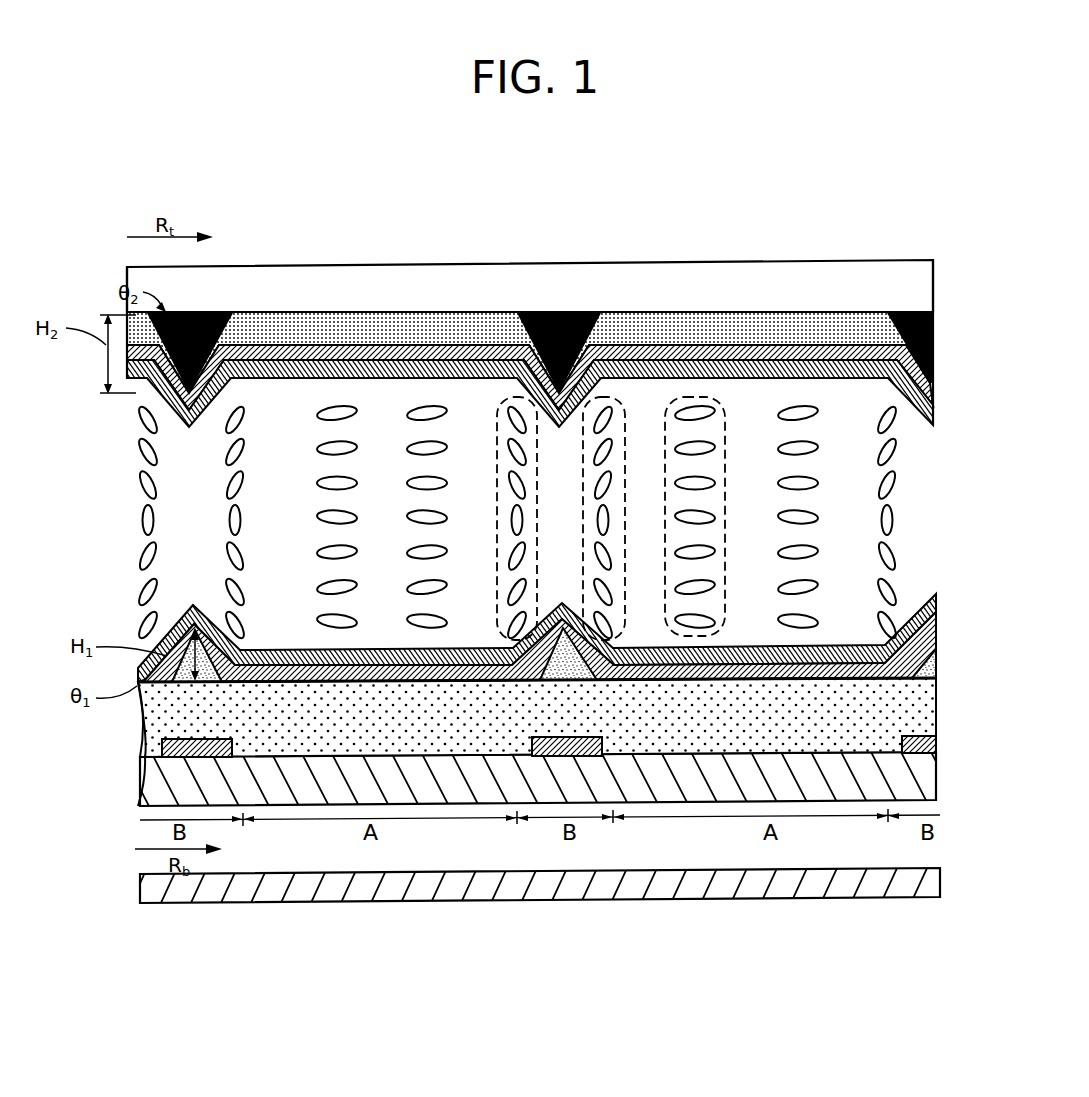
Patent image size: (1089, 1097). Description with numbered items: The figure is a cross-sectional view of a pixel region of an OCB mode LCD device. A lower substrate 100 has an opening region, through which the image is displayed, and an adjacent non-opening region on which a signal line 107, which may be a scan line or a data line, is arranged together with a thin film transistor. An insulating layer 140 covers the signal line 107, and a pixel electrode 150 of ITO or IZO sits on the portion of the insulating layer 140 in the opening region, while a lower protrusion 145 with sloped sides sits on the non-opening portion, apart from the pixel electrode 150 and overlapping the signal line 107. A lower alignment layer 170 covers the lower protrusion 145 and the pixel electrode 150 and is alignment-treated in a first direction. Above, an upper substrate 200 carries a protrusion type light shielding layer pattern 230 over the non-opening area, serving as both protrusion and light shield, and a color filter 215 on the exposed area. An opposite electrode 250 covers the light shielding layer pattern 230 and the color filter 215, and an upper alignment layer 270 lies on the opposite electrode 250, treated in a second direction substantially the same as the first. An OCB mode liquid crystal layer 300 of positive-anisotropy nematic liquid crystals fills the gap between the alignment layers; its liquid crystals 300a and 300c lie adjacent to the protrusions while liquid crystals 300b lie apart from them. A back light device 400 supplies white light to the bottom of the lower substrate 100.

The lower substrate 100 is at (920, 782).
The signal line 107 is at (938, 745).
The insulating layer 140 is at (920, 707).
The lower protrusion 145 is at (930, 668).
The pixel electrode 150 is at (810, 679).
The lower alignment layer 170 is at (930, 630).
The upper substrate 200 is at (900, 292).
The color filter 215 is at (425, 326).
The light shielding layer pattern 230 is at (553, 311).
The opposite electrode 250 is at (382, 353).
The upper alignment layer 270 is at (322, 364).
The OCB mode liquid crystal layer 300 is at (922, 517).
The liquid crystals 300a is at (607, 396).
The liquid crystals 300b is at (705, 396).
The liquid crystals 300c is at (510, 396).
The back light device 400 is at (922, 880).